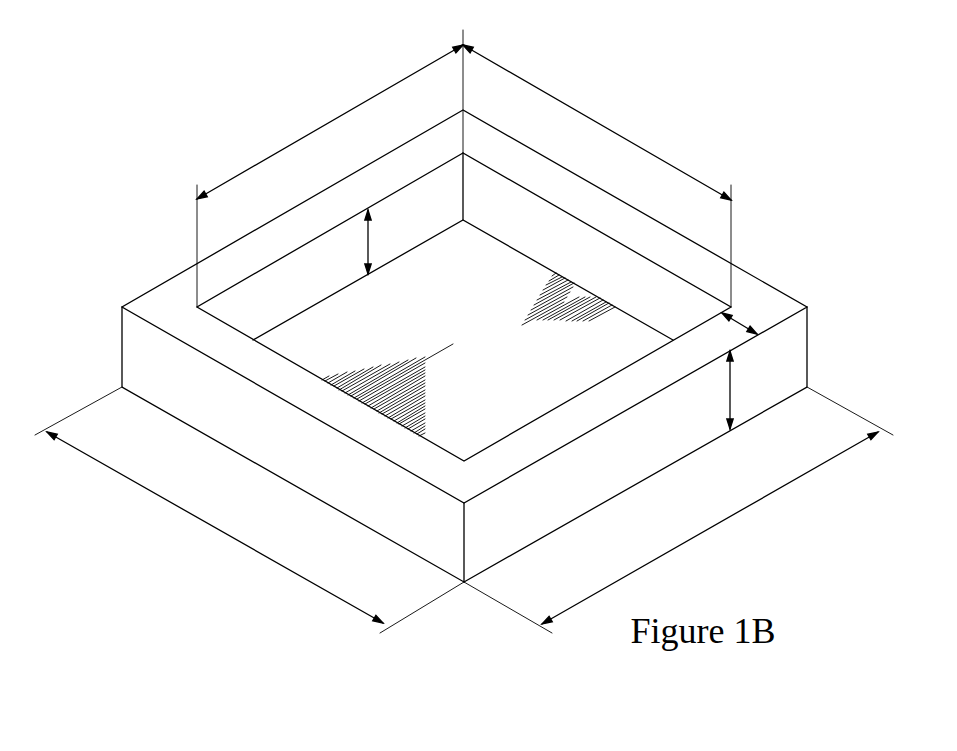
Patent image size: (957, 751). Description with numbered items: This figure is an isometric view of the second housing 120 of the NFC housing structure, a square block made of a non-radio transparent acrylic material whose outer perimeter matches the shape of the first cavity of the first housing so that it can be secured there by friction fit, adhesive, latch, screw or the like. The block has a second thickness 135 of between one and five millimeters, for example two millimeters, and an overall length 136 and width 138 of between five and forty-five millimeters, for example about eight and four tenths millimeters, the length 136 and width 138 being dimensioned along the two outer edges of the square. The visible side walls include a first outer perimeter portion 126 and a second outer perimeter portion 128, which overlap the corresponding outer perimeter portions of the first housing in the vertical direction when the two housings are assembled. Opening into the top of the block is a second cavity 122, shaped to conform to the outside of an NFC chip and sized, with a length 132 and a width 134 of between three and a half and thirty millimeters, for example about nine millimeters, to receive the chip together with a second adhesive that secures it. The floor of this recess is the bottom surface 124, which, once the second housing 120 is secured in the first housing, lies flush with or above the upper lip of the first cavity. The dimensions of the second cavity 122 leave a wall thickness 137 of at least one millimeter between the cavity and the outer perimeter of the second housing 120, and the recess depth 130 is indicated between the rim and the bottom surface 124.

The second housing 120 is at (168, 278).
The second cavity 122 is at (330, 276).
The bottom surface 124 is at (497, 268).
The first outer perimeter portion 126 is at (283, 453).
The second outer perimeter portion 128 is at (665, 442).
The depth of recess 130 is at (370, 240).
The length 132 is at (597, 118).
The width 134 is at (335, 120).
The second thickness 135 is at (733, 392).
The length 136 is at (215, 528).
The wall thickness 137 is at (740, 323).
The width 138 is at (715, 528).